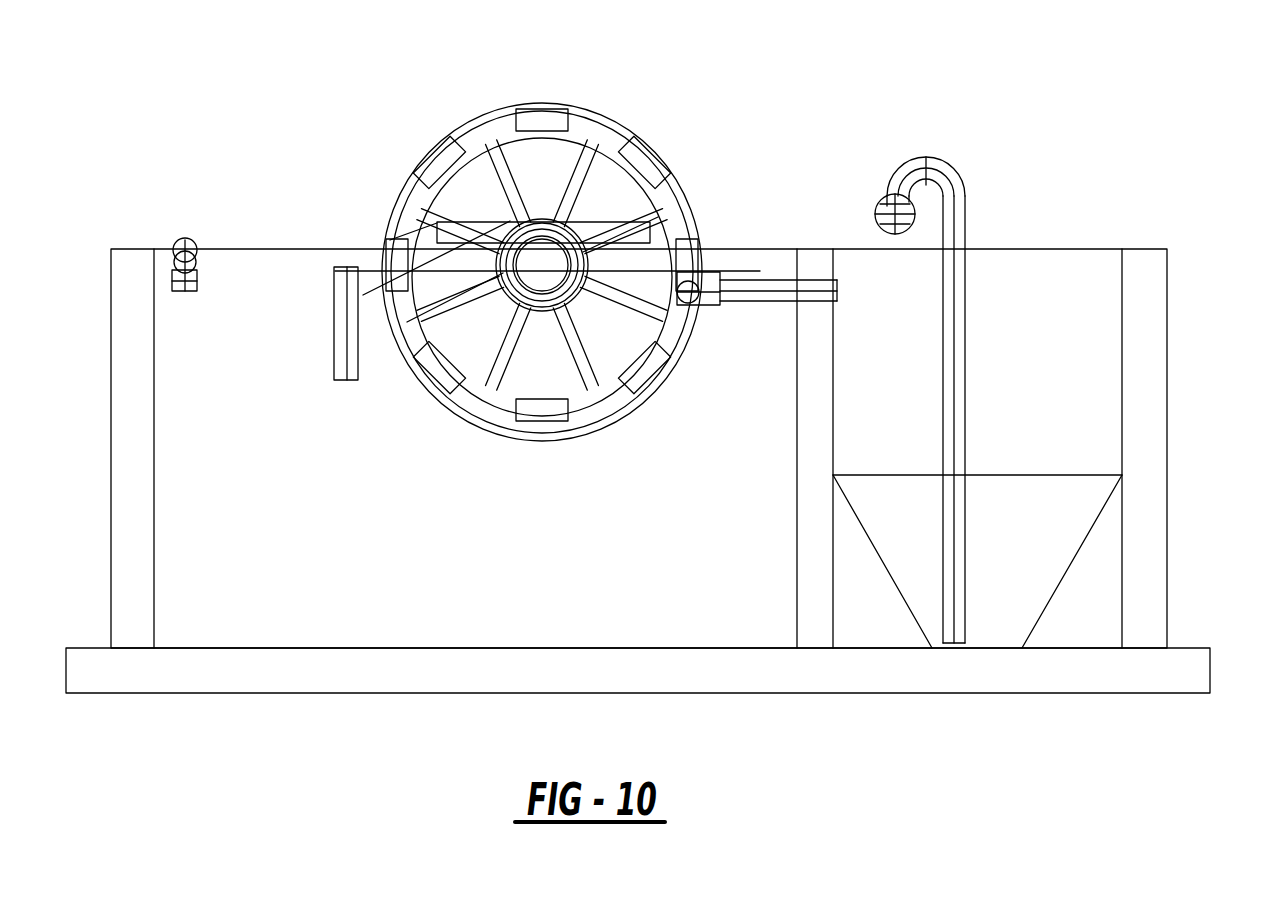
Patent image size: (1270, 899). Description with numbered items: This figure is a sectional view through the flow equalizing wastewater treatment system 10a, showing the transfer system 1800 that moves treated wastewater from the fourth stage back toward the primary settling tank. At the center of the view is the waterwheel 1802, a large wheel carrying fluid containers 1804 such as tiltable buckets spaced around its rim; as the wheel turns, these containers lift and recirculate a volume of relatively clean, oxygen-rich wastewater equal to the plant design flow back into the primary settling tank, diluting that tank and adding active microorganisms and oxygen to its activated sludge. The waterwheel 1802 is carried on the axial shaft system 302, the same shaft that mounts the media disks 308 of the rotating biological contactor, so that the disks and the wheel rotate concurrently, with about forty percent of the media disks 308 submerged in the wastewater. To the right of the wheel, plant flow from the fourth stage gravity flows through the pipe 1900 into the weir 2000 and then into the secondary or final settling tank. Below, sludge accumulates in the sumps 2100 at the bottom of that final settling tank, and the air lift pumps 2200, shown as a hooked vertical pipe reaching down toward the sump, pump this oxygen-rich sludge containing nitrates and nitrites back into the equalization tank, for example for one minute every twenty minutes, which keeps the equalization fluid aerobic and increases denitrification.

The flow equalizing wastewater treatment system 10a is at (185, 125).
The transfer system 1800 is at (582, 275).
The waterwheel 1802 is at (427, 150).
The fluid containers 1804 is at (547, 122).
The media disks 308 is at (703, 212).
The axial shaft system 302 is at (543, 278).
The pipe 1900 is at (760, 296).
The weir 2000 is at (850, 290).
The air lift pumps 2200 is at (962, 313).
The sumps 2100 is at (1017, 563).